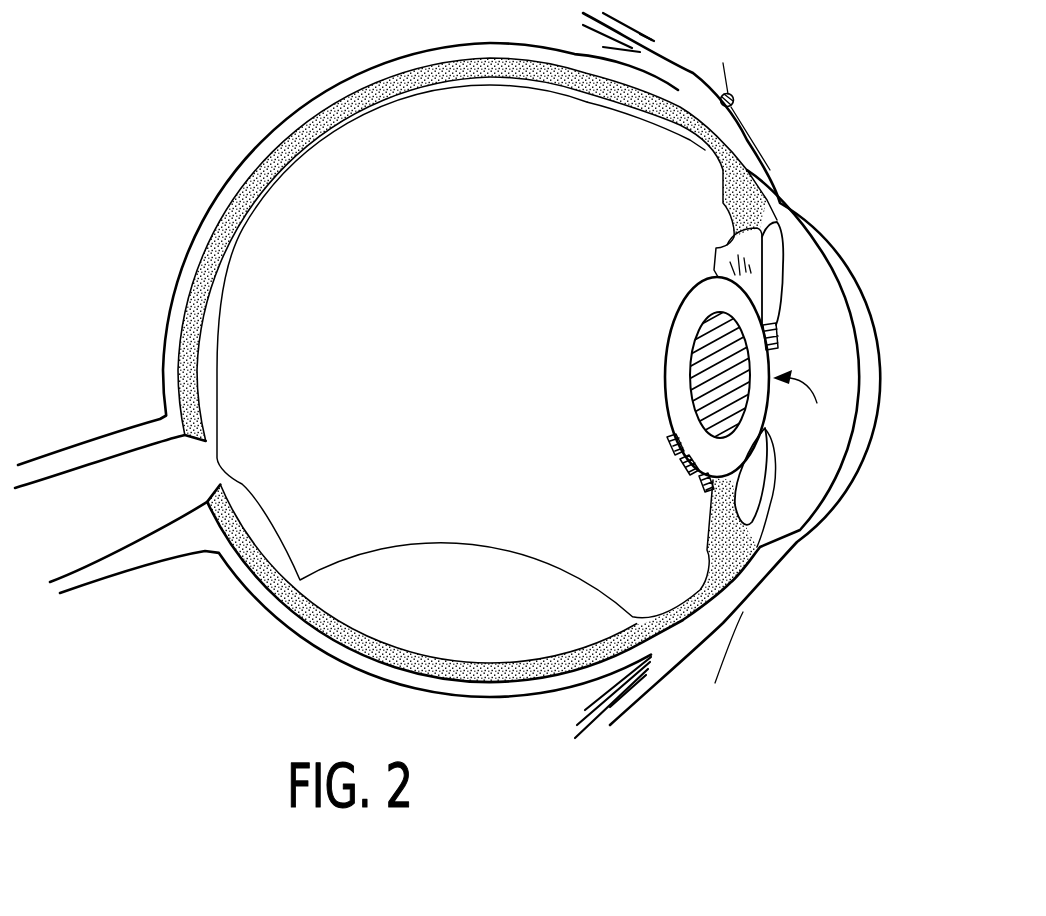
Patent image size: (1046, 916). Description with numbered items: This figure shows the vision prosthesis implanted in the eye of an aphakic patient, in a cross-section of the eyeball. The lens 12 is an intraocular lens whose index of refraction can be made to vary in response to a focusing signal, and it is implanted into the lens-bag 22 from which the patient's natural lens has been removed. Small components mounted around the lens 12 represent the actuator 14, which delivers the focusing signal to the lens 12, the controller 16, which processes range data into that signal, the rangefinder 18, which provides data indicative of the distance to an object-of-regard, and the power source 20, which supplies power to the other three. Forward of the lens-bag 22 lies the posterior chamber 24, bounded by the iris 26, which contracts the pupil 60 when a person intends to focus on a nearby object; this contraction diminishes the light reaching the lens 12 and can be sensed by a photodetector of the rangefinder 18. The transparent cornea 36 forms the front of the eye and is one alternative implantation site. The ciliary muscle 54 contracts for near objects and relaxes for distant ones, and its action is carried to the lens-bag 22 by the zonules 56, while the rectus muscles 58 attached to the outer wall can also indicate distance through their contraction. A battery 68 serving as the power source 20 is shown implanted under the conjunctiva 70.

The lens 12 is at (710, 357).
The actuator 14 is at (668, 440).
The controller 16 is at (683, 458).
The rangefinder 18 is at (700, 480).
The power source 20 is at (777, 337).
The lens-bag 22 is at (684, 307).
The posterior chamber 24 is at (770, 223).
The iris 26 is at (772, 278).
The cornea 36 is at (867, 427).
The ciliary muscle 54 is at (723, 228).
The zonules 56 is at (715, 248).
The rectus muscles 58 is at (615, 703).
The pupil 60 is at (803, 401).
The battery 68 is at (733, 95).
The conjunctiva 70 is at (725, 73).